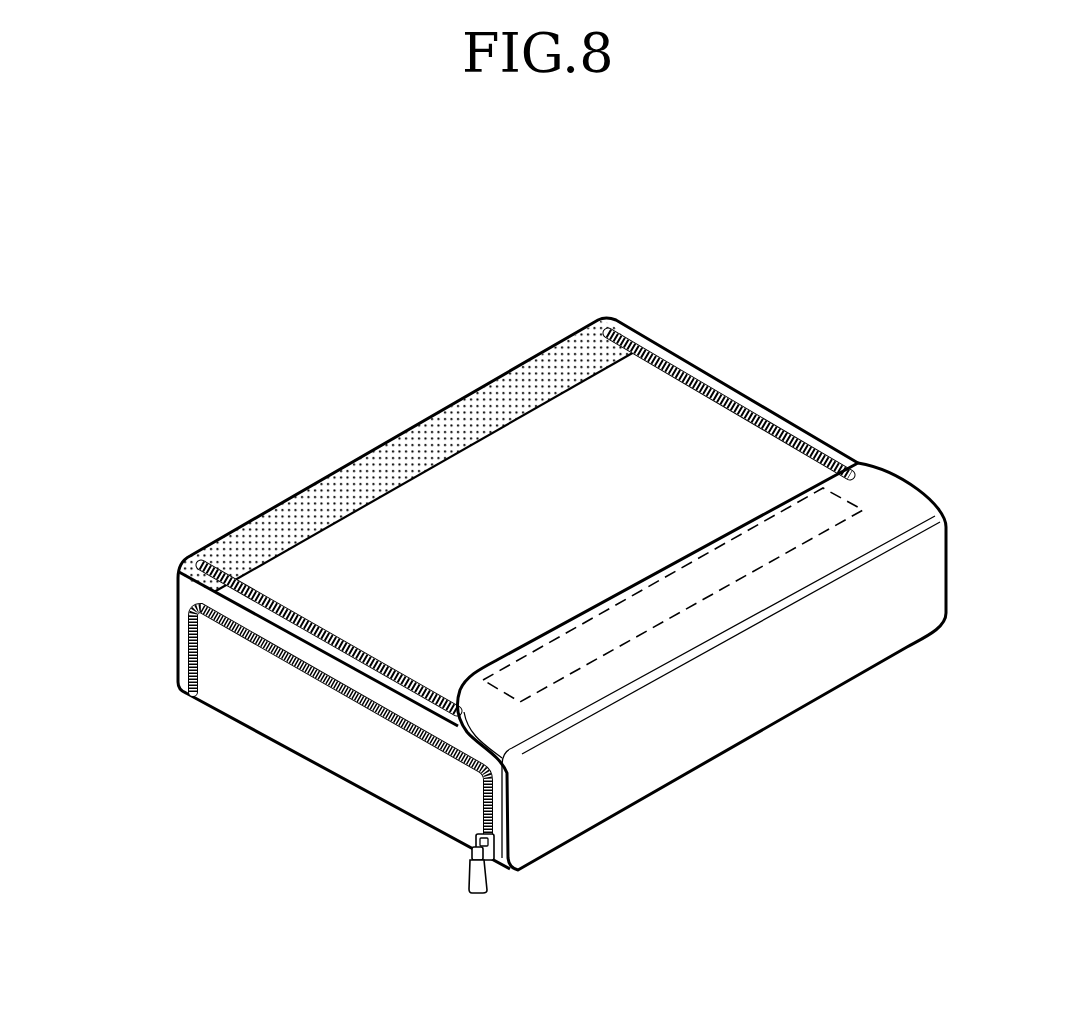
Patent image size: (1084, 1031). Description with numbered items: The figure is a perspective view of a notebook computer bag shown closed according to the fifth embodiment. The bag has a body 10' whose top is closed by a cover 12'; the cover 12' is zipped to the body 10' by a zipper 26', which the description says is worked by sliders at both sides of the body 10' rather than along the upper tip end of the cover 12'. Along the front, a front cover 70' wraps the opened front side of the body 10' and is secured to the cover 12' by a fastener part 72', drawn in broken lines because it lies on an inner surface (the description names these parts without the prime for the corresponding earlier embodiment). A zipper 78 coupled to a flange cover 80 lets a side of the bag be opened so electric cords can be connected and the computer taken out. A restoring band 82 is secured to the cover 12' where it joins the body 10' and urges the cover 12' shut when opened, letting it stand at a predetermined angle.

The body 10' is at (286, 723).
The cover 12' is at (518, 490).
The zipper fastener 26' is at (525, 440).
The bolster cushion 70' is at (702, 603).
The pocket outline 72' is at (673, 568).
The zipper 78 is at (430, 742).
The flange cover 80 is at (295, 732).
The restoring band 82 is at (418, 440).